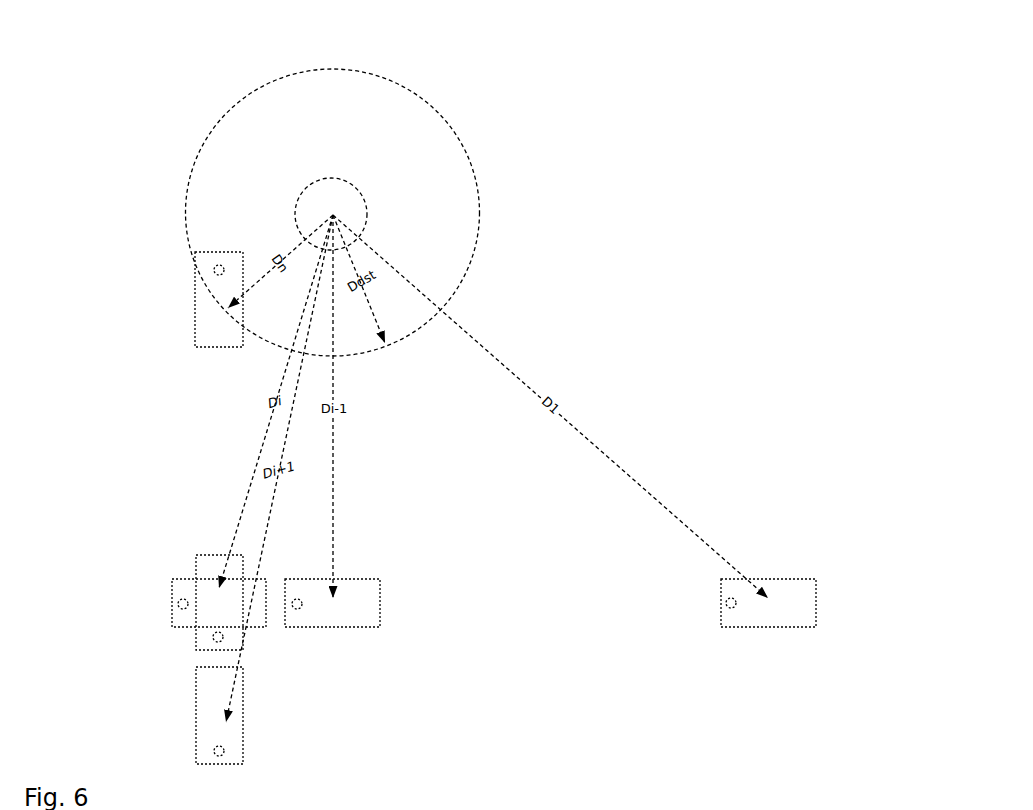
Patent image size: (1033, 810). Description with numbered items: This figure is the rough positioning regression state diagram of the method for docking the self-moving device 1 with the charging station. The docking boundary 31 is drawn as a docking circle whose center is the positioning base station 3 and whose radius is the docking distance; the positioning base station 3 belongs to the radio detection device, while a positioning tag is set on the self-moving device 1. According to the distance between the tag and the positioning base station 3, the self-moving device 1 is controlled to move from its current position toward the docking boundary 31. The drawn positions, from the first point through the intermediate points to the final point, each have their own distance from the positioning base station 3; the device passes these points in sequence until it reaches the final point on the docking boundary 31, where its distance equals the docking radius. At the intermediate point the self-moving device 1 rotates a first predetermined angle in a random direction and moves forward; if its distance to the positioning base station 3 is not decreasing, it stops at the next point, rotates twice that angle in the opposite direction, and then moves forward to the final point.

The docking boundary 31 is at (453, 128).
The positioning base station 3 is at (363, 193).
The self-moving device 1 is at (362, 589).